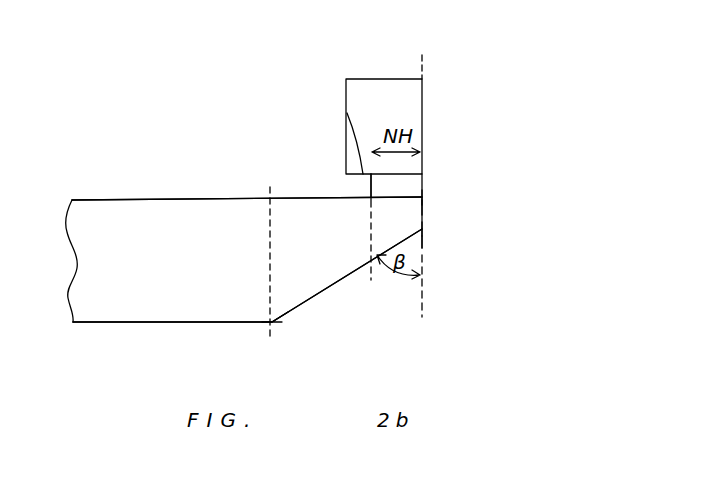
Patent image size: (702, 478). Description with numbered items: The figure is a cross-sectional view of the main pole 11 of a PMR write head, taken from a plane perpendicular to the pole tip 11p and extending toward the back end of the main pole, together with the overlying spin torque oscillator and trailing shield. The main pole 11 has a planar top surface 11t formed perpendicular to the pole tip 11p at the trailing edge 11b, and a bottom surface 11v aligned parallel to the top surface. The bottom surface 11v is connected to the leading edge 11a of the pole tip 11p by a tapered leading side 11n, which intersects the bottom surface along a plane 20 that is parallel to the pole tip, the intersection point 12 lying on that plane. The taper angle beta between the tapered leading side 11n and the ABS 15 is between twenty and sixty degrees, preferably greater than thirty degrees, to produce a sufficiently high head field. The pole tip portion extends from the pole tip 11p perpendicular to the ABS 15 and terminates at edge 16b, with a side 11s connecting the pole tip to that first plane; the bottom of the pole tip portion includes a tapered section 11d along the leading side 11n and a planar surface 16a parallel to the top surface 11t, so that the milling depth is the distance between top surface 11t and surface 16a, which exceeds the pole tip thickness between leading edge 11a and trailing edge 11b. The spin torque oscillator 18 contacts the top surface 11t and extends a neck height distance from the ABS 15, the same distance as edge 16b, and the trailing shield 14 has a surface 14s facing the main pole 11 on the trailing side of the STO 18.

The main pole layer 11 is at (185, 305).
The top surface 11t is at (103, 200).
The bottom surface 11v is at (126, 322).
The tapered leading side 11n is at (322, 290).
The side 11s is at (410, 218).
The trailing edge 11b is at (422, 199).
The pole tip 11p is at (422, 208).
The leading edge 11a is at (422, 230).
The tapered section of pole tip bottom surface 11d is at (424, 240).
The intersection point 12 is at (272, 322).
The trailing shield 14 is at (408, 100).
The trailing shield surface 14s is at (347, 113).
The ABS plane 15 is at (422, 52).
The pole tip bottom surface 16a is at (378, 249).
The edge 16b is at (370, 207).
The spin torque oscillator 18 is at (382, 186).
The plane 20 is at (264, 262).